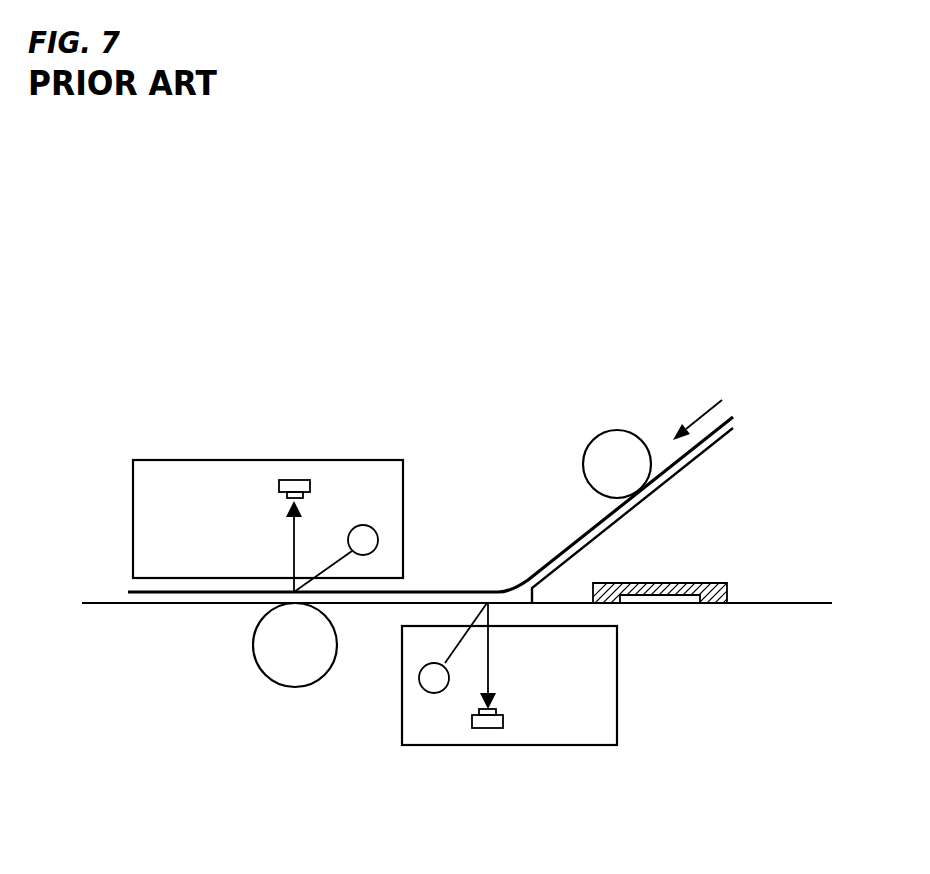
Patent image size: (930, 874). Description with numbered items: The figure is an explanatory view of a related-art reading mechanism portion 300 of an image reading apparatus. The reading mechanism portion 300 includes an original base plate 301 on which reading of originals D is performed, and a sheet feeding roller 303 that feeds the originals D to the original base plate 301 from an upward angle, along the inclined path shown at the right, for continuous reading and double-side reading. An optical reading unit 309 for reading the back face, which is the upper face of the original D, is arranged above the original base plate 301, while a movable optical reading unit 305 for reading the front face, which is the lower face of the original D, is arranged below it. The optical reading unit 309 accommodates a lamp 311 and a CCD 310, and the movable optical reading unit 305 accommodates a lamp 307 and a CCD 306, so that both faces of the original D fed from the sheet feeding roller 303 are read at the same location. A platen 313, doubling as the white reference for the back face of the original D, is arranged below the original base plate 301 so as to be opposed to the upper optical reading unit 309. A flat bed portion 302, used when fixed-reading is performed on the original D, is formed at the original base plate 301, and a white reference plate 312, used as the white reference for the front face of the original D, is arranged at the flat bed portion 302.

The reading mechanism portion 300 is at (795, 290).
The original base plate 301 is at (102, 591).
The flat bed portion 302 is at (782, 602).
The sheet feeding roller 303 is at (603, 430).
The movable optical reading unit 305 is at (567, 745).
The CCD 306 is at (489, 728).
The lamp 307 is at (421, 684).
The optical reading unit 309 is at (217, 460).
The CCD 310 is at (294, 480).
The lamp 311 is at (374, 530).
The white reference plate 312 is at (670, 603).
The platen 313 is at (292, 688).
The original D is at (460, 588).